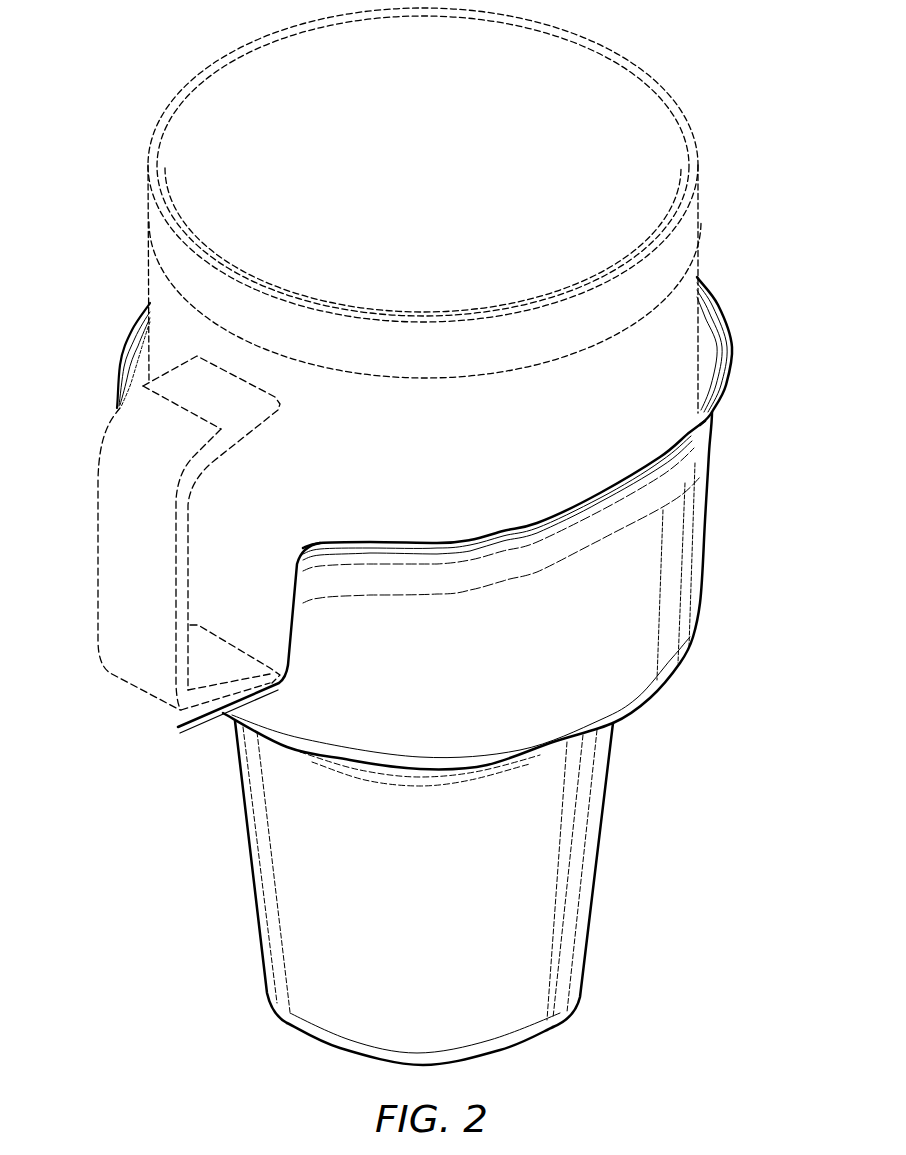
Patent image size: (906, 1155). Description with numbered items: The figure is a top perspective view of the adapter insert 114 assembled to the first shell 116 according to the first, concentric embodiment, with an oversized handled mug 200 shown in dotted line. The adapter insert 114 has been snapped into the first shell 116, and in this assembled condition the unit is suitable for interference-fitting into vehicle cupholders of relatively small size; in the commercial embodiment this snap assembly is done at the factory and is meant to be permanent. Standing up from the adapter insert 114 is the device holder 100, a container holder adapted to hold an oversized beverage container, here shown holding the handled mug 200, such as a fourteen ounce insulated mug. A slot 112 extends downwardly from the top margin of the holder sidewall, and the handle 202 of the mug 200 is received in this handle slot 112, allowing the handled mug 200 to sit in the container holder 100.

The device holder 100 is at (453, 671).
The slot 112 is at (246, 631).
The adapter insert 114 is at (709, 497).
The first shell 116 is at (600, 860).
The handled mug 200 is at (628, 62).
The handle 202 is at (97, 570).